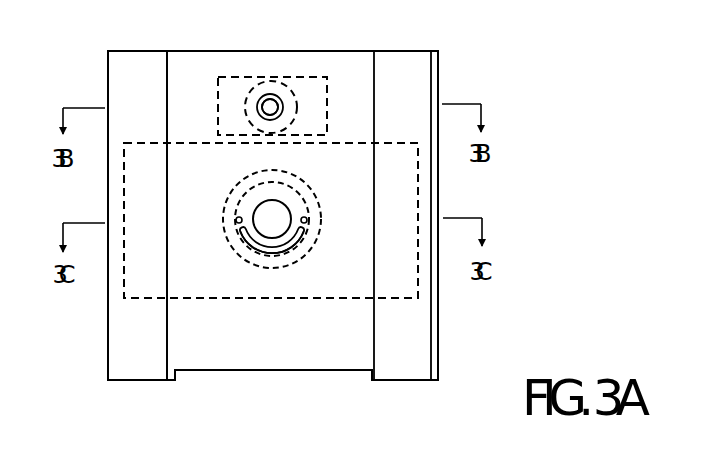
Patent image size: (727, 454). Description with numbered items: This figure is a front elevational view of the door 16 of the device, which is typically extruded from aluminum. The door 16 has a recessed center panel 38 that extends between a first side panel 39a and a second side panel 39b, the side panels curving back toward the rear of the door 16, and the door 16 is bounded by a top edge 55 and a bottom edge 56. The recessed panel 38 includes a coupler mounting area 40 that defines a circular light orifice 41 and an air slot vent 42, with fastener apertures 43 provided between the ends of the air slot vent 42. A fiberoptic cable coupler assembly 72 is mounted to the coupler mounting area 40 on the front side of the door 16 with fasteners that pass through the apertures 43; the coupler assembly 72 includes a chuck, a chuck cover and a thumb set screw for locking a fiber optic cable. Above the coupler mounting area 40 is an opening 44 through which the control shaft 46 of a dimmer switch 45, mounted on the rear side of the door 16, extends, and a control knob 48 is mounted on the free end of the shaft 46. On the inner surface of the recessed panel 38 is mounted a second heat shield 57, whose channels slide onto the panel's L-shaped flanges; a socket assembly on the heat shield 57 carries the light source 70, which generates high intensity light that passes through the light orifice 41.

The door 16 is at (107, 52).
The top edge 55 is at (189, 51).
The opening 44 is at (273, 94).
The control knob 48 is at (297, 105).
The recessed center panel 38 is at (347, 68).
The second heat shield 57 is at (388, 143).
The control shaft 46 is at (257, 108).
The dimmer switch 45 is at (326, 98).
The light source 70 is at (241, 184).
The circular light orifice 41 is at (285, 218).
The fastener apertures 43 is at (236, 220).
The fiberoptic cable coupler assembly 72 is at (242, 245).
The air slot vent 42 is at (268, 250).
The coupler mounting area 40 is at (317, 272).
The first side panel 39a is at (128, 341).
The second side panel 39b is at (418, 348).
The bottom edge 56 is at (213, 371).